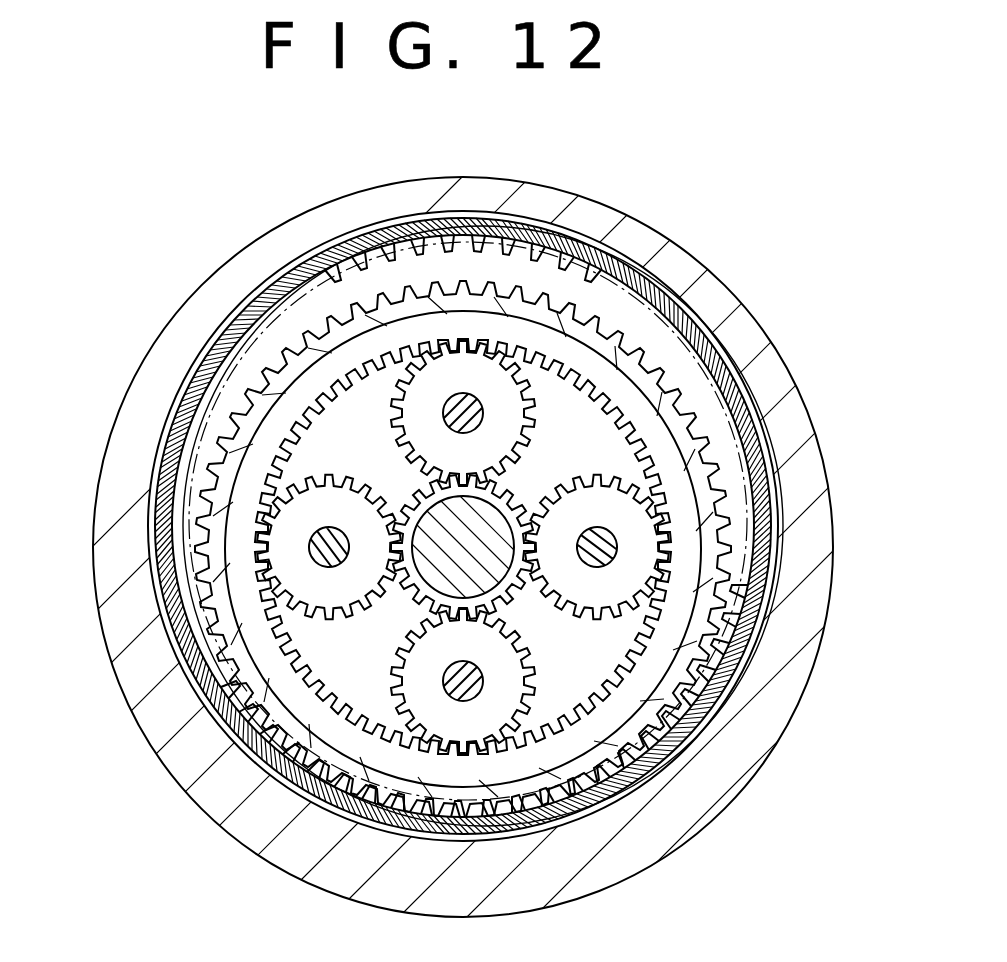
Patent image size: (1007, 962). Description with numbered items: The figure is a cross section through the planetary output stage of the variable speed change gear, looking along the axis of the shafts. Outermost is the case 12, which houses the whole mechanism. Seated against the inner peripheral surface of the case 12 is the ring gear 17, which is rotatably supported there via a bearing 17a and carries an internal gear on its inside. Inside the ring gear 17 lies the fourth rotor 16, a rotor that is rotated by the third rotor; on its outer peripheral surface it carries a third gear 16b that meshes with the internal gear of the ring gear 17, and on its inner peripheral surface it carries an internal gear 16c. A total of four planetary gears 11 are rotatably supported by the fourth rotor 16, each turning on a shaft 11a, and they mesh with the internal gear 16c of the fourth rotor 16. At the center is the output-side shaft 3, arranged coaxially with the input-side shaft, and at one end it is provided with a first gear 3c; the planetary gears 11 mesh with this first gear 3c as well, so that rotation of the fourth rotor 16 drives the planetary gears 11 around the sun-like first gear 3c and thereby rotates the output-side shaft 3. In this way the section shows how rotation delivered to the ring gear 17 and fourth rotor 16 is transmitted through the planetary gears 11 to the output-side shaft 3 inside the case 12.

The case 12 is at (193, 290).
The ring gear 17 is at (530, 232).
The bearing 17a is at (153, 593).
The fourth rotor 16 is at (547, 317).
The third gear 16b is at (410, 313).
The internal gear 16c is at (340, 390).
The planetary gears 11 is at (630, 549).
The shaft 11a is at (640, 593).
The output-side shaft 3 is at (440, 570).
The first gear 3c is at (507, 590).